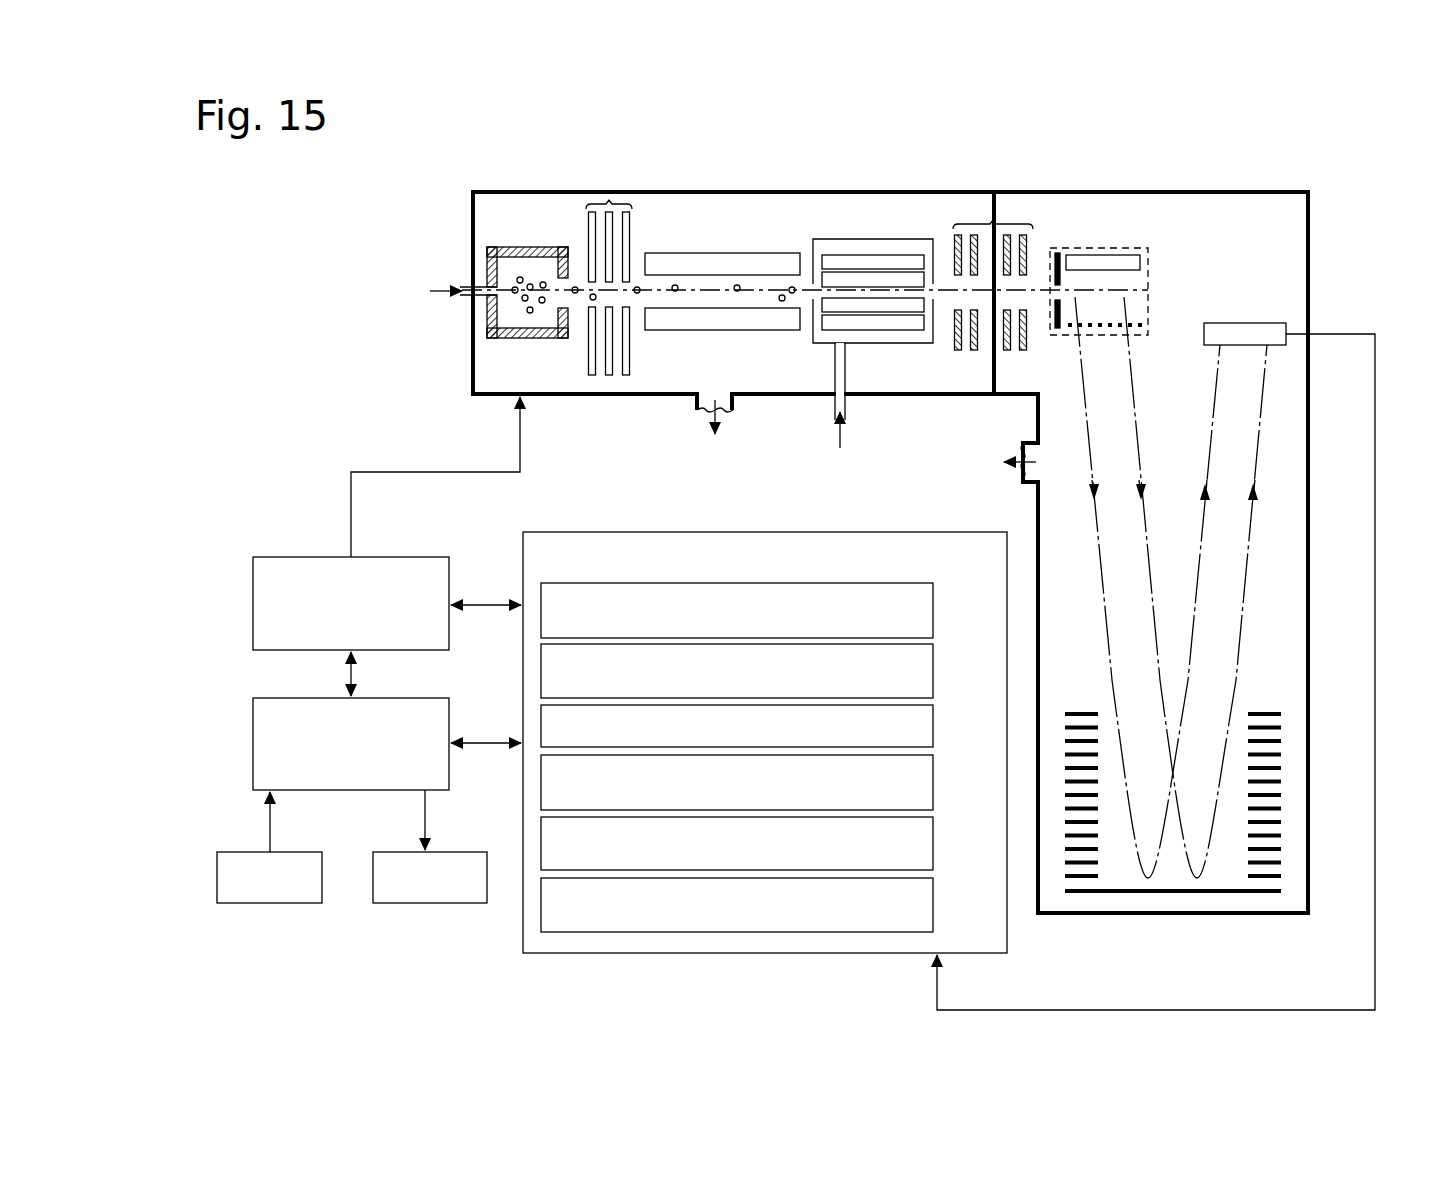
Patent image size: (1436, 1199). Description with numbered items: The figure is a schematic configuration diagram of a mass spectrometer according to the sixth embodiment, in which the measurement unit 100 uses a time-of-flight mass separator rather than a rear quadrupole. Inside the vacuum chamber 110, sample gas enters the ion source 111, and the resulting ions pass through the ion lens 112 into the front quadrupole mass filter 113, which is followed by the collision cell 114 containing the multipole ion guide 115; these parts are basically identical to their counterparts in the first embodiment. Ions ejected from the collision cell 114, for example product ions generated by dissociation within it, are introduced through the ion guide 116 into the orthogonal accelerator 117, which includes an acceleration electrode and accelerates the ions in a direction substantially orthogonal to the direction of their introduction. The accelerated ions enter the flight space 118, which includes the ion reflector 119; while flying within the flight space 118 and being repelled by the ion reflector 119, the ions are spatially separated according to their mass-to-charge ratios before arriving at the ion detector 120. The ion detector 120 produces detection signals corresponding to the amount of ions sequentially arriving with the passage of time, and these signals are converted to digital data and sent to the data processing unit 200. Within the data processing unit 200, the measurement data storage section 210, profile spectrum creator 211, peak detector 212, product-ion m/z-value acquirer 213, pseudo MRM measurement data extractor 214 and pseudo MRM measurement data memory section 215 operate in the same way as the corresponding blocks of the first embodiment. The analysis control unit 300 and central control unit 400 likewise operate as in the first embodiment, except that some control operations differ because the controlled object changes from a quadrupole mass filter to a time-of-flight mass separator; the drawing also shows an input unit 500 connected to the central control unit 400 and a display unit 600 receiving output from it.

The measurement unit 100 is at (445, 181).
The vacuum chamber 110 is at (822, 192).
The ion source 111 is at (527, 247).
The ion lens 112 is at (611, 200).
The front quadrupole mass filter 113 is at (718, 253).
The collision cell 114 is at (920, 240).
The multipole ion guide 115 is at (852, 255).
The ion guide 116 is at (1005, 224).
The orthogonal accelerator 117 is at (1080, 247).
The flight space 118 is at (1191, 463).
The ion reflector 119 is at (1285, 710).
The ion detector 120 is at (1248, 323).
The data processing unit 200 is at (827, 957).
The measurement data storage section 210 is at (936, 600).
The profile spectrum creator 211 is at (936, 663).
The peak detector 212 is at (936, 722).
The product-ion m/z-value acquirer 213 is at (936, 775).
The pseudo MRM measurement data extractor 214 is at (936, 836).
The pseudo MRM measurement data memory section 215 is at (936, 895).
The analysis control unit 300 is at (253, 583).
The central control unit 400 is at (253, 731).
The input unit 500 is at (284, 906).
The display unit 600 is at (440, 906).